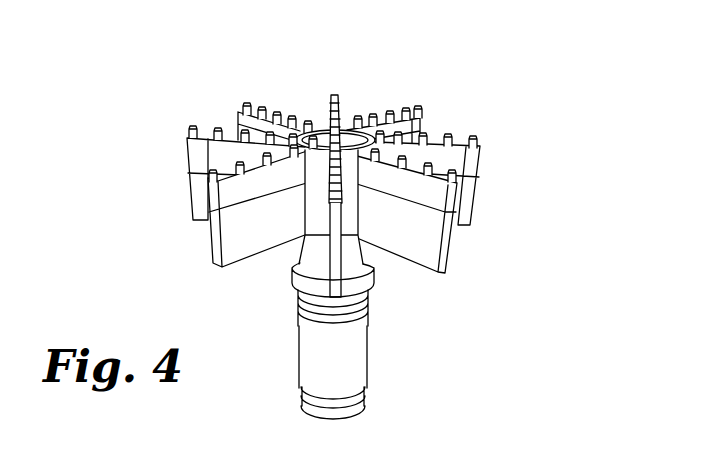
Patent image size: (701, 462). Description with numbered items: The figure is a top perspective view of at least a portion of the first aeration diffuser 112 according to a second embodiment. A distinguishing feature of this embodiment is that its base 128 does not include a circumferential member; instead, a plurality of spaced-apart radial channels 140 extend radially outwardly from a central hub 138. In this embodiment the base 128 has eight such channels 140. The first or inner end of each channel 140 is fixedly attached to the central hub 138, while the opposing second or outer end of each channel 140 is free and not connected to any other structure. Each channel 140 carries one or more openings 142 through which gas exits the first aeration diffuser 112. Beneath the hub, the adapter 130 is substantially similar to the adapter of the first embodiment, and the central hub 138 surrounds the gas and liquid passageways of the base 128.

The first aeration diffuser 112 is at (337, 230).
The base 128 is at (317, 157).
The adapter 130 is at (347, 357).
The central hub 138 is at (347, 205).
The radial channel 140 is at (237, 123).
The opening 142 is at (408, 108).